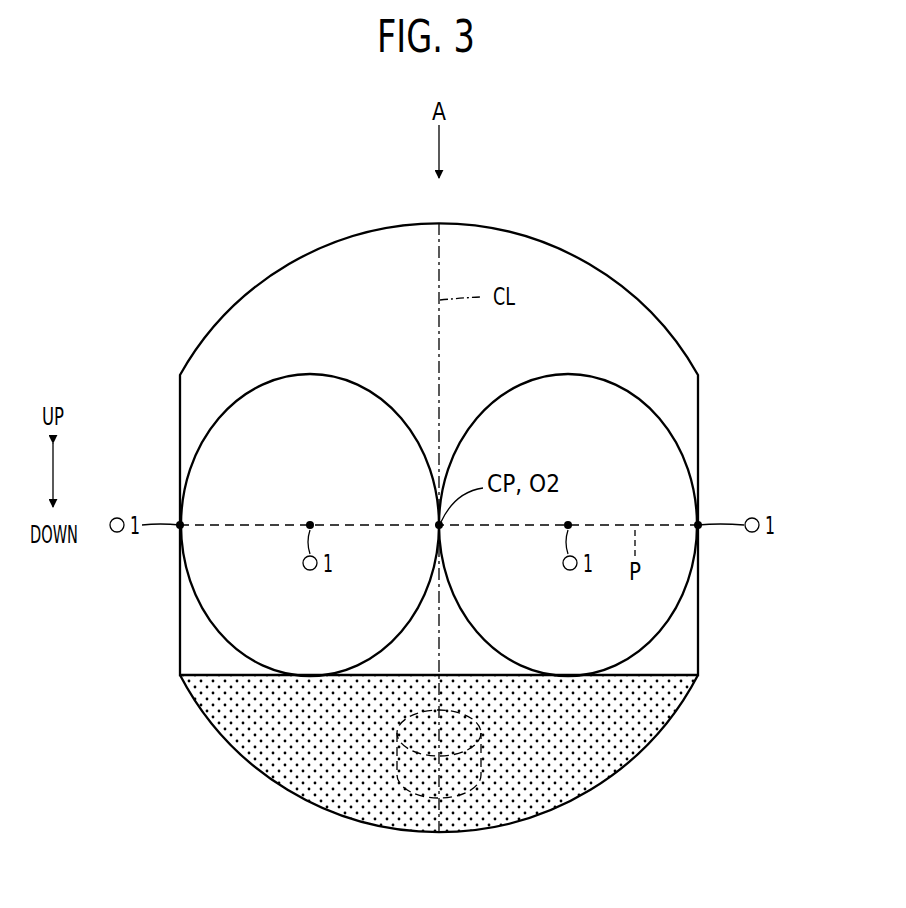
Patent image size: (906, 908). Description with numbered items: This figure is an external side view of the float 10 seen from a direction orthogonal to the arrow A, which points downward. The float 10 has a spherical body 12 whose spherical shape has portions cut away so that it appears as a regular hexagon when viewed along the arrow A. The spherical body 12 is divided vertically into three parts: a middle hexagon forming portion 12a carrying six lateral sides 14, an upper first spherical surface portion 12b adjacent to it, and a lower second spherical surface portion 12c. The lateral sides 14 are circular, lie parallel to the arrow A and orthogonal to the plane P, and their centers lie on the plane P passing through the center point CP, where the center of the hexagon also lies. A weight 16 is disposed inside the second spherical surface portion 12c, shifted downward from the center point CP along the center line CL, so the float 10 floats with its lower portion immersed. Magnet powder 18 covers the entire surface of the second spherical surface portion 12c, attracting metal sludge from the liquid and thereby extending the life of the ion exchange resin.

The float 10 is at (279, 129).
The spherical body 12 is at (574, 256).
The hexagon forming portion 12a is at (665, 490).
The first spherical surface portion 12b is at (316, 282).
The second spherical surface portion 12c is at (276, 754).
The lateral sides 14 is at (180, 405).
The weight 16 is at (473, 788).
The magnet powder 18 is at (340, 793).